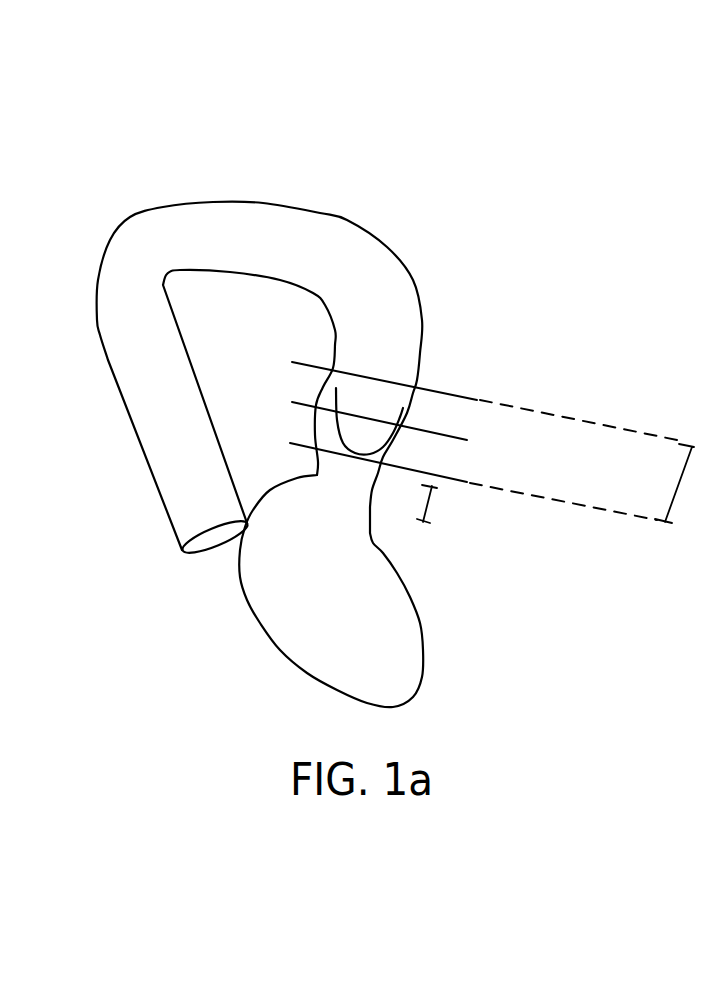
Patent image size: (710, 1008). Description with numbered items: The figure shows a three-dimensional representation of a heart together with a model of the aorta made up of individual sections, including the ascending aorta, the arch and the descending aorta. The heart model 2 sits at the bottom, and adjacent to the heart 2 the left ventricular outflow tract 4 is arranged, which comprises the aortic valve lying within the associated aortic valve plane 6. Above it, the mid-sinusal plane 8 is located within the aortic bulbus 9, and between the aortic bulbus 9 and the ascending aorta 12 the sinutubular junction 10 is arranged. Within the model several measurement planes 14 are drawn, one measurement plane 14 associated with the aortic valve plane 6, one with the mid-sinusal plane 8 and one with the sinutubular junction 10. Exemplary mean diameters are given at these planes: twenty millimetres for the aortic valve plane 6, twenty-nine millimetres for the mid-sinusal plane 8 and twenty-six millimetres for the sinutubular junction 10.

The heart model 2 is at (422, 680).
The left ventricular outflow tract 4 is at (428, 505).
The aortic valve plane 6 is at (463, 483).
The mid-sinusal plane 8 is at (300, 402).
The aortic bulbus 9 is at (673, 490).
The sinutubular junction 10 is at (309, 366).
The ascending aorta 12 is at (440, 240).
The measurement plane 14 is at (461, 443).